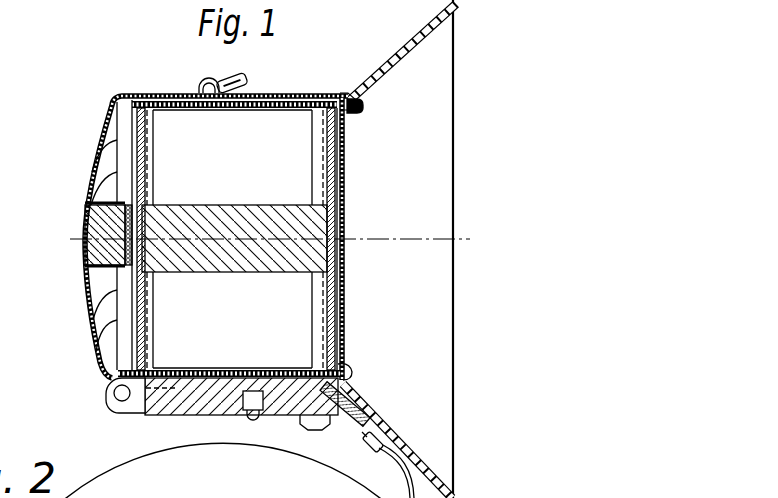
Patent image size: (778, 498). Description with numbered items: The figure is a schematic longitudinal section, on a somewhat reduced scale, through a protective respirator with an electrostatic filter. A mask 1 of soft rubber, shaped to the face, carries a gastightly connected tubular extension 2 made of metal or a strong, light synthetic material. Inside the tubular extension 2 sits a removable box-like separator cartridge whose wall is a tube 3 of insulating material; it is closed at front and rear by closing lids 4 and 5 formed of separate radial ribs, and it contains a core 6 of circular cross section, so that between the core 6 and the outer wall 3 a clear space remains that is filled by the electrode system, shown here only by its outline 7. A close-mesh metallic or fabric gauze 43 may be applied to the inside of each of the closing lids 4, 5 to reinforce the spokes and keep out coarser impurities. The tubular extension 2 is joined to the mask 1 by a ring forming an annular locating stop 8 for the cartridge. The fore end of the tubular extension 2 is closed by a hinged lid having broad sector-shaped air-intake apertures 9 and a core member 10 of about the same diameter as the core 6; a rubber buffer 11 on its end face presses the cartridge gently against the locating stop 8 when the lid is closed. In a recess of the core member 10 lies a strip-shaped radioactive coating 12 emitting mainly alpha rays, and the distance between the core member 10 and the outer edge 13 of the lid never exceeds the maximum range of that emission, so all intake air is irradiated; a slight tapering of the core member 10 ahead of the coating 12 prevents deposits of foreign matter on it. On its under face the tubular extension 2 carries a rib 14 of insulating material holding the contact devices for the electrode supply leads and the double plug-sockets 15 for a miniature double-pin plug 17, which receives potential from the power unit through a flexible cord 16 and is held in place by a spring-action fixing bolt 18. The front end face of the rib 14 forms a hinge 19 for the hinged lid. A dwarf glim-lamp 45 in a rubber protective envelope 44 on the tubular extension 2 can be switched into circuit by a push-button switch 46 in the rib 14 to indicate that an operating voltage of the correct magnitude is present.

The mask 1 is at (380, 57).
The tubular extension 2 is at (325, 92).
The tube of insulating material 3 is at (147, 110).
The front closing lid 4 is at (112, 133).
The rear closing lid 5 is at (340, 182).
The core 6 is at (222, 205).
The outline of electrode system 7 is at (140, 127).
The annular locating stop 8 is at (358, 108).
The air-intake apertures 9 is at (110, 162).
The core member 10 is at (82, 215).
The rubber buffer 11 is at (124, 238).
The radioactive coating 12 is at (110, 197).
The outer edge of hinged lid 13 is at (123, 91).
The rib of insulating material 14 is at (143, 414).
The double plug-sockets 15 is at (345, 387).
The flexible cord 16 is at (400, 473).
The miniature double-pin plug 17 is at (366, 445).
The spring-action fixing bolt 18 is at (312, 425).
The hinge 19 is at (105, 397).
The gauze 43 is at (153, 166).
The protective envelope 44 is at (216, 78).
The dwarf glim-lamp 45 is at (248, 82).
The push-button switch 46 is at (250, 391).